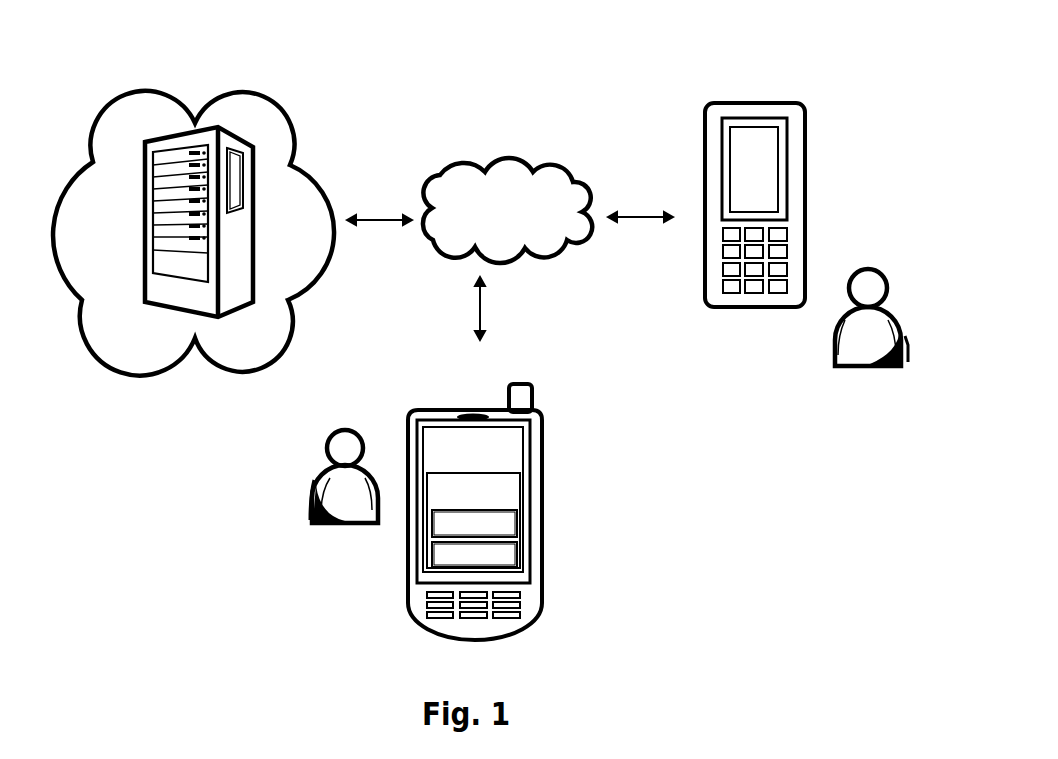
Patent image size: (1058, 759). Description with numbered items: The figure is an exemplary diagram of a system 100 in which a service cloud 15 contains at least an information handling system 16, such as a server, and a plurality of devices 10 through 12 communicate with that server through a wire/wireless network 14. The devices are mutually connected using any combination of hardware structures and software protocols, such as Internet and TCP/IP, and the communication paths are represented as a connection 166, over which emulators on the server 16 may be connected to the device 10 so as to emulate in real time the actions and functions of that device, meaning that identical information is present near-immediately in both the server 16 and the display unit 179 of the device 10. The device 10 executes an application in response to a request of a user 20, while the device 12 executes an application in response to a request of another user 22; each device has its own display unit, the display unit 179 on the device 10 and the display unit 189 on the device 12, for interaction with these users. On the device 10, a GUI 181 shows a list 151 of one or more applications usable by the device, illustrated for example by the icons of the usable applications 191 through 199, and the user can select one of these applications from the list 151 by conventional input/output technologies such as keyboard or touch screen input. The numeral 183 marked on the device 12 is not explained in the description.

The system 100 is at (632, 76).
The service cloud 15 is at (280, 130).
The information handling system 16 is at (255, 235).
The wire/wireless network 14 is at (585, 183).
The connection 166 is at (375, 221).
The device 12 is at (805, 125).
The display unit 189 is at (787, 170).
The display screen of second mobile device 183 is at (778, 205).
The user 22 is at (908, 345).
The device 10 is at (542, 430).
The display unit 179 is at (530, 452).
The GUI 181 is at (525, 465).
The list 151 is at (522, 502).
The usable application 191 is at (517, 535).
The usable application 199 is at (517, 562).
The user 20 is at (310, 483).